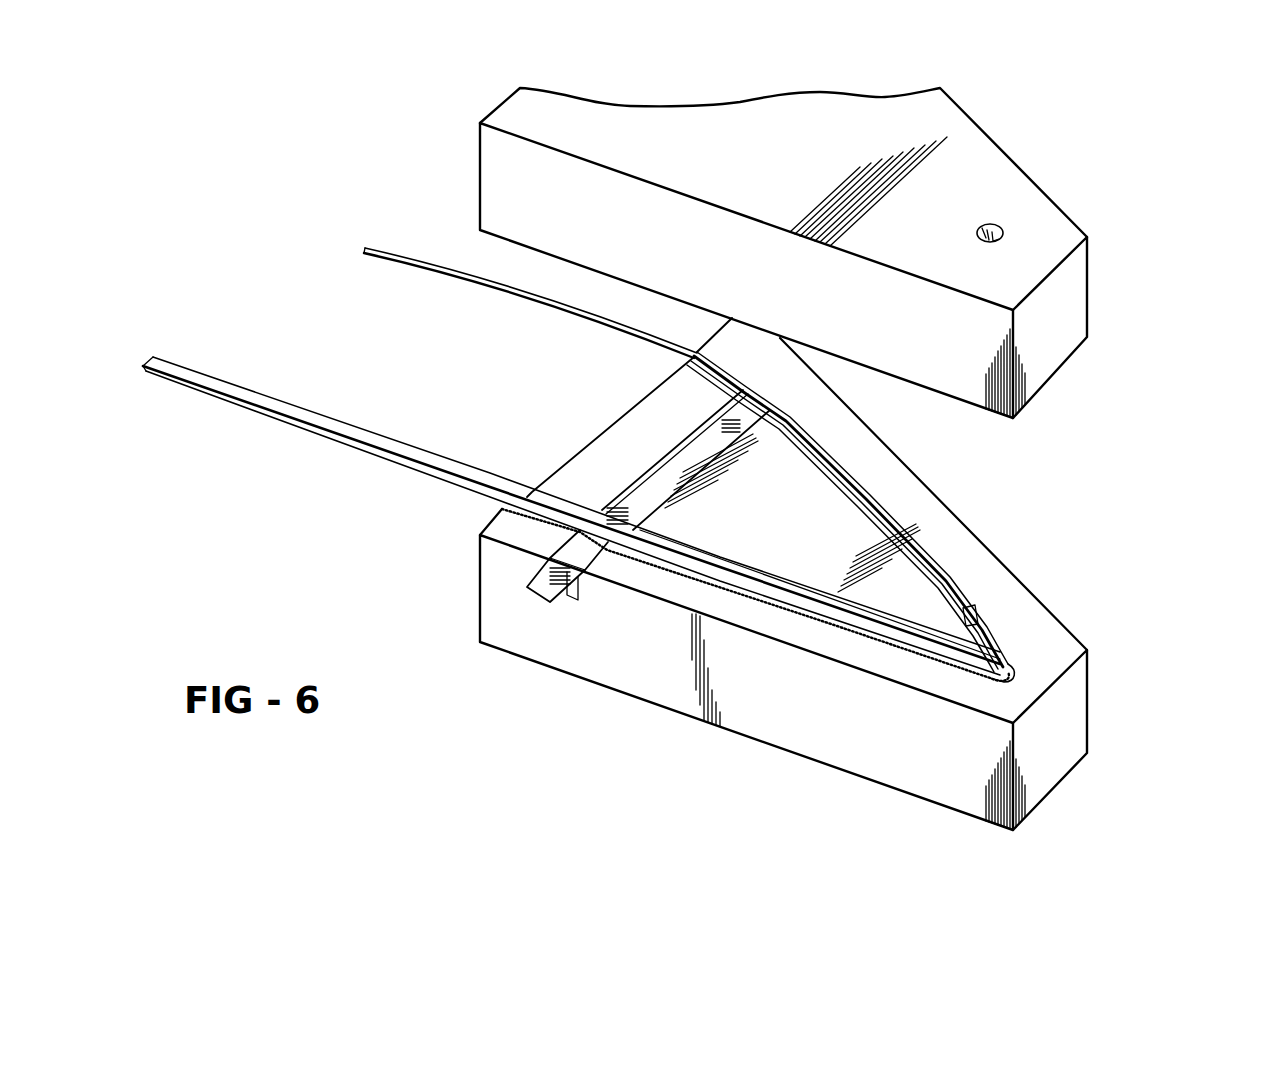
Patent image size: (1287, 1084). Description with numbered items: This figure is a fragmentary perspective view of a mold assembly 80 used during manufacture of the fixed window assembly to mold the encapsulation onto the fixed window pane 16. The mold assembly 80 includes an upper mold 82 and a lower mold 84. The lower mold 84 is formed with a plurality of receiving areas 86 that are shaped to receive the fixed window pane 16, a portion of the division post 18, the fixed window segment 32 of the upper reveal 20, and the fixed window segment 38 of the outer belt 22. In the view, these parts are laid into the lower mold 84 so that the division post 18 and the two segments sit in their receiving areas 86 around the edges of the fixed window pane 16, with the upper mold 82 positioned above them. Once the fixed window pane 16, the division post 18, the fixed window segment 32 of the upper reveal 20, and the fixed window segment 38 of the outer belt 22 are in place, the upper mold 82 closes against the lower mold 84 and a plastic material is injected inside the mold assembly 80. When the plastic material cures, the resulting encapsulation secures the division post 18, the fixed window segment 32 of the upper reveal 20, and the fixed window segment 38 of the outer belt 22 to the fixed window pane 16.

The fixed window pane 16 is at (815, 582).
The division post 18 is at (668, 480).
The upper reveal 20 is at (438, 262).
The outer belt 22 is at (350, 453).
The fixed window segment of the upper reveal 32 is at (927, 512).
The fixed window segment of the outer belt 38 is at (863, 605).
The mold assembly 80 is at (765, 845).
The upper mold 82 is at (1062, 374).
The lower mold 84 is at (1092, 712).
The receiving areas 86 is at (698, 438).